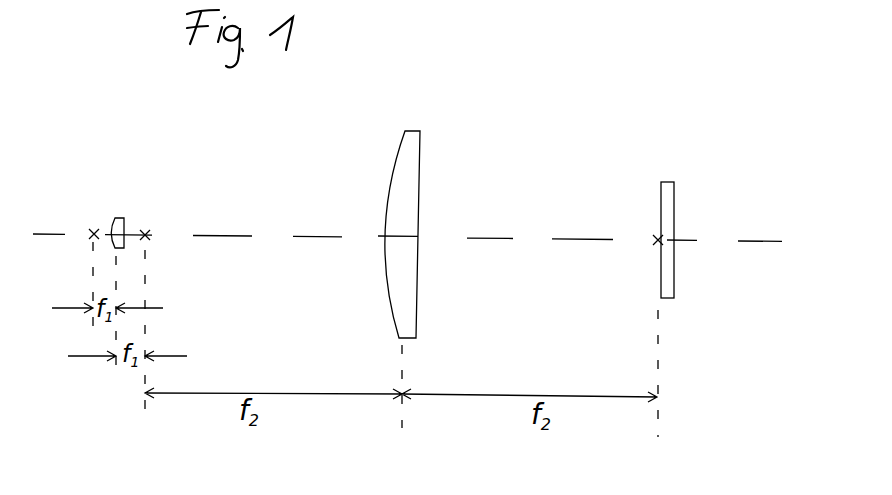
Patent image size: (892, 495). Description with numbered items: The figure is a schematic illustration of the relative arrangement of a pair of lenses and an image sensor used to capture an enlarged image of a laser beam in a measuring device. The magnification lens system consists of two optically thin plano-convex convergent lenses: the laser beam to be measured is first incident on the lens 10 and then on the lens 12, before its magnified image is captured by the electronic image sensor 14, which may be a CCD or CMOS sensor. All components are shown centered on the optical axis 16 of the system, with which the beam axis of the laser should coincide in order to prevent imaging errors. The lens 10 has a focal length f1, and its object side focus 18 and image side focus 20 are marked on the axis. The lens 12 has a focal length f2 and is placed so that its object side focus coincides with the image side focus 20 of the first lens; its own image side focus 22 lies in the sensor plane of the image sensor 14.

The lens 10 is at (122, 219).
The lens 12 is at (418, 130).
The image sensor 14 is at (670, 181).
The optical axis 16 is at (747, 247).
The object side focus 18 is at (95, 229).
The image side focus 20 is at (147, 229).
The image side focus 22 is at (655, 241).